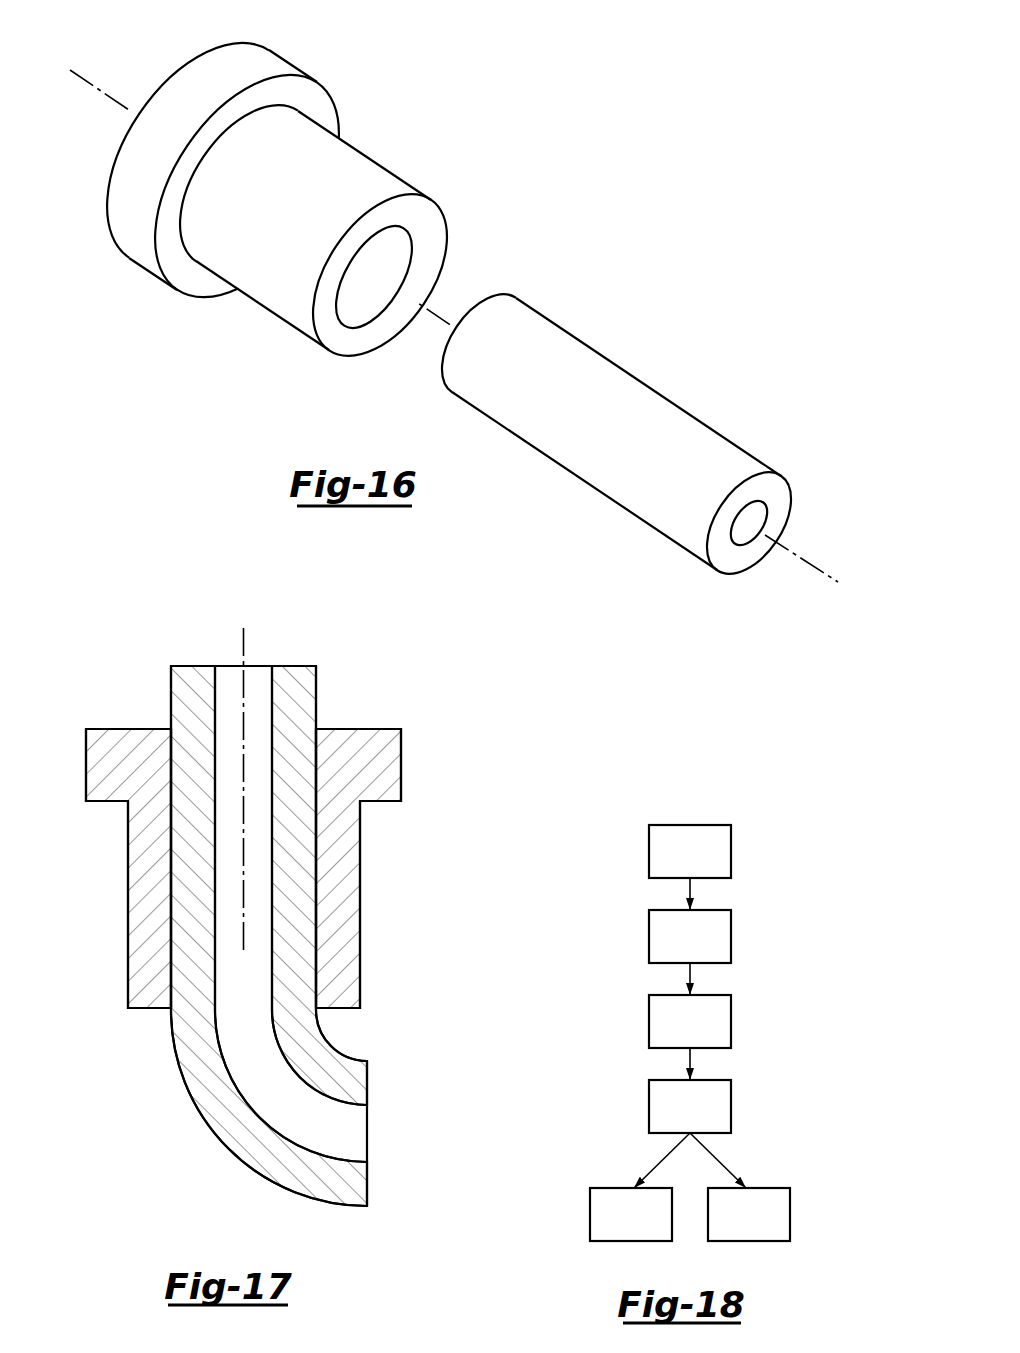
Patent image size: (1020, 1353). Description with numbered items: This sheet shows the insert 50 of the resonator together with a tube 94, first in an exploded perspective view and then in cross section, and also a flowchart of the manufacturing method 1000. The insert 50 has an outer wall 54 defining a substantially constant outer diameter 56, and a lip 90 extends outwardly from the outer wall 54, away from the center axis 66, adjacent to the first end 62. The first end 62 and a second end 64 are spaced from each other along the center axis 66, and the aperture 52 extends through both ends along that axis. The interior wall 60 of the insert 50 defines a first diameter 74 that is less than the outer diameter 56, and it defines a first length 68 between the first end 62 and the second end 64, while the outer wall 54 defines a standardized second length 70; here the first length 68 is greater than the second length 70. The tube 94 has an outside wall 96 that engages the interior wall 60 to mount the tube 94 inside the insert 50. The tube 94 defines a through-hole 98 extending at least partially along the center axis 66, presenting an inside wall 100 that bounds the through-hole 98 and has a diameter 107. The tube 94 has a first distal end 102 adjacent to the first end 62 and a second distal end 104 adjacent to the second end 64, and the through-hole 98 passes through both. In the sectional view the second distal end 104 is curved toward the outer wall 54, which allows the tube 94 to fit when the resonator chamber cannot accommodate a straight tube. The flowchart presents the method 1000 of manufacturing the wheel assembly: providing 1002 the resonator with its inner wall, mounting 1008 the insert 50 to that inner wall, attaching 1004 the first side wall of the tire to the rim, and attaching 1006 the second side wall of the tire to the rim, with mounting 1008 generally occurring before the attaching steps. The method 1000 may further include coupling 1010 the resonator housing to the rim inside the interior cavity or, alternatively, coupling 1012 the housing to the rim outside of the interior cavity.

In FIG. 16, the insert 50 is at (290, 221).
In FIG. 17, the insert 50 is at (283, 871).
In FIG. 16, the aperture 52 is at (403, 242).
In FIG. 16, the outer wall 54 is at (284, 303).
In FIG. 17, the outer wall 54 is at (128, 956).
In FIG. 17, the outer diameter 56 is at (360, 1035).
In FIG. 16, the interior wall 60 is at (365, 316).
In FIG. 17, the first end 62 is at (139, 728).
In FIG. 16, the second end 64 is at (431, 222).
In FIG. 17, the second end 64 is at (337, 1012).
In FIG. 16, the center axis 66 is at (826, 563).
In FIG. 17, the center axis 66 is at (245, 900).
In FIG. 17, the first length 68 is at (408, 729).
In FIG. 17, the second length 70 is at (428, 1008).
In FIG. 17, the first diameter 74 is at (316, 662).
In FIG. 16, the lip 90 is at (142, 242).
In FIG. 17, the lip 90 is at (96, 774).
In FIG. 16, the tube 94 is at (642, 454).
In FIG. 17, the tube 94 is at (311, 846).
In FIG. 16, the outside wall 96 is at (593, 372).
In FIG. 16, the through-hole 98 is at (748, 541).
In FIG. 16, the inside wall 100 is at (768, 521).
In FIG. 17, the inside wall 100 is at (355, 1140).
In FIG. 16, the first distal end 102 is at (438, 355).
In FIG. 17, the first distal end 102 is at (278, 666).
In FIG. 16, the second distal end 104 is at (770, 483).
In FIG. 17, the second distal end 104 is at (367, 1088).
In FIG. 17, the diameter 107 is at (272, 662).
In FIG. 18, the method 1000 is at (720, 1029).
In FIG. 18, the providing 1002 is at (672, 867).
In FIG. 18, the attaching 1004 is at (672, 1037).
In FIG. 18, the attaching 1006 is at (672, 1122).
In FIG. 18, the mounting 1008 is at (672, 952).
In FIG. 18, the coupling 1010 is at (613, 1230).
In FIG. 18, the coupling 1012 is at (731, 1230).